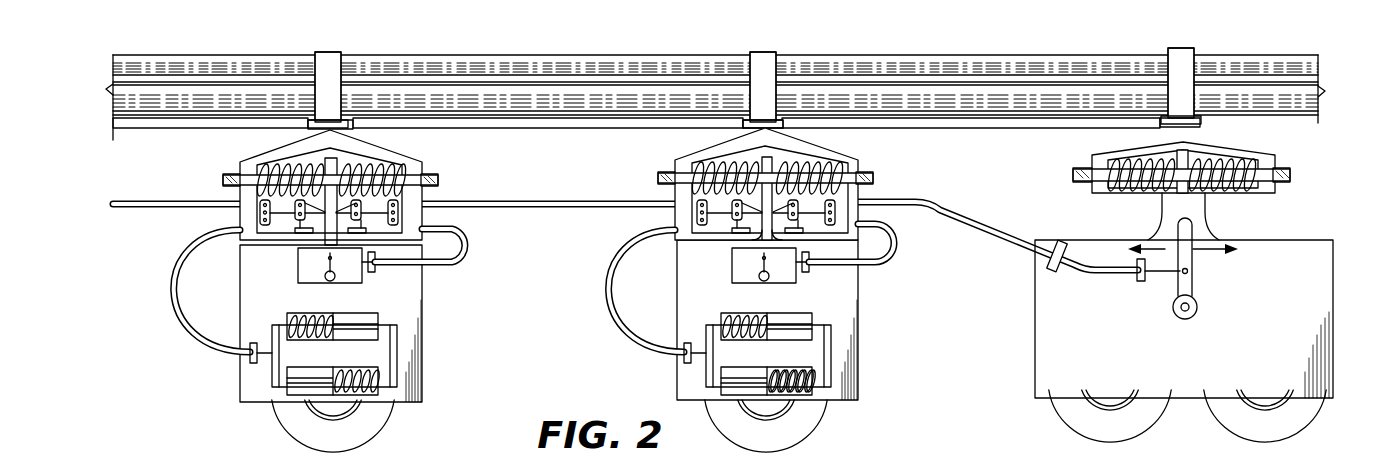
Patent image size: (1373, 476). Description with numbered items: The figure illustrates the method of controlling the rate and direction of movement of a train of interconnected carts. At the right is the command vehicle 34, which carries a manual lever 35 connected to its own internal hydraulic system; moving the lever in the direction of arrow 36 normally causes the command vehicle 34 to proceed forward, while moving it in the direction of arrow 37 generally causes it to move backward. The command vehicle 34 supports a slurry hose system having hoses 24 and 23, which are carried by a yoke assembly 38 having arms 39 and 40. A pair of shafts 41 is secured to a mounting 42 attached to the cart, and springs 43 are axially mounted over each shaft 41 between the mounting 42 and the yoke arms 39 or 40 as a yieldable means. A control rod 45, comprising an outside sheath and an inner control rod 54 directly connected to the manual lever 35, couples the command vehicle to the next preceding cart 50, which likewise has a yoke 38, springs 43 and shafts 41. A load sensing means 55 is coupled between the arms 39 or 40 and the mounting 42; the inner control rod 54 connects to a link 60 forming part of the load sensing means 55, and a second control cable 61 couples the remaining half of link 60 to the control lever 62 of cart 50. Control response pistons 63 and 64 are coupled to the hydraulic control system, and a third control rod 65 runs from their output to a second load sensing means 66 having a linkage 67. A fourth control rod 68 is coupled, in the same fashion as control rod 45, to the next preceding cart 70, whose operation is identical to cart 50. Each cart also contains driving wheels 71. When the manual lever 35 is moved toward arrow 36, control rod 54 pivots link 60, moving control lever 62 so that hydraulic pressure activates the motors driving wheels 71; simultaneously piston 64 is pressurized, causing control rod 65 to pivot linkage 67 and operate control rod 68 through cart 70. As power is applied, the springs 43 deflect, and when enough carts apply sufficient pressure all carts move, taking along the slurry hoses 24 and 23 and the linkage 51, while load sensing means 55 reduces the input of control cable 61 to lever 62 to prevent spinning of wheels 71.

The slurry hose 23 is at (1320, 92).
The slurry hose 24 is at (1320, 75).
The command vehicle 34 is at (1327, 288).
The manual lever 35 is at (1192, 291).
The arrow 36 is at (1214, 236).
The arrow 37 is at (1157, 235).
The yoke assembly 38 is at (973, 188).
The yoke arm 39 is at (846, 153).
The yoke arm 40 is at (676, 193).
The shaft 41 is at (874, 177).
The mounting 42 is at (762, 231).
The spring 43 is at (700, 168).
The control rod 45 is at (958, 214).
The cart 50 is at (858, 338).
The linkage 51 is at (975, 129).
The inner control rod 54 is at (1163, 278).
The load sensing means 55 is at (856, 213).
The link 60 is at (852, 236).
The second control cable 61 is at (897, 251).
The control lever 62 is at (762, 262).
The control response piston 63 is at (790, 314).
The control response piston 64 is at (790, 365).
The third control rod 65 is at (612, 263).
The second load sensing means 66 is at (680, 211).
The linkage 67 is at (690, 231).
The fourth control rod 68 is at (512, 203).
The cart 70 is at (417, 285).
The driving wheel 71 is at (820, 421).